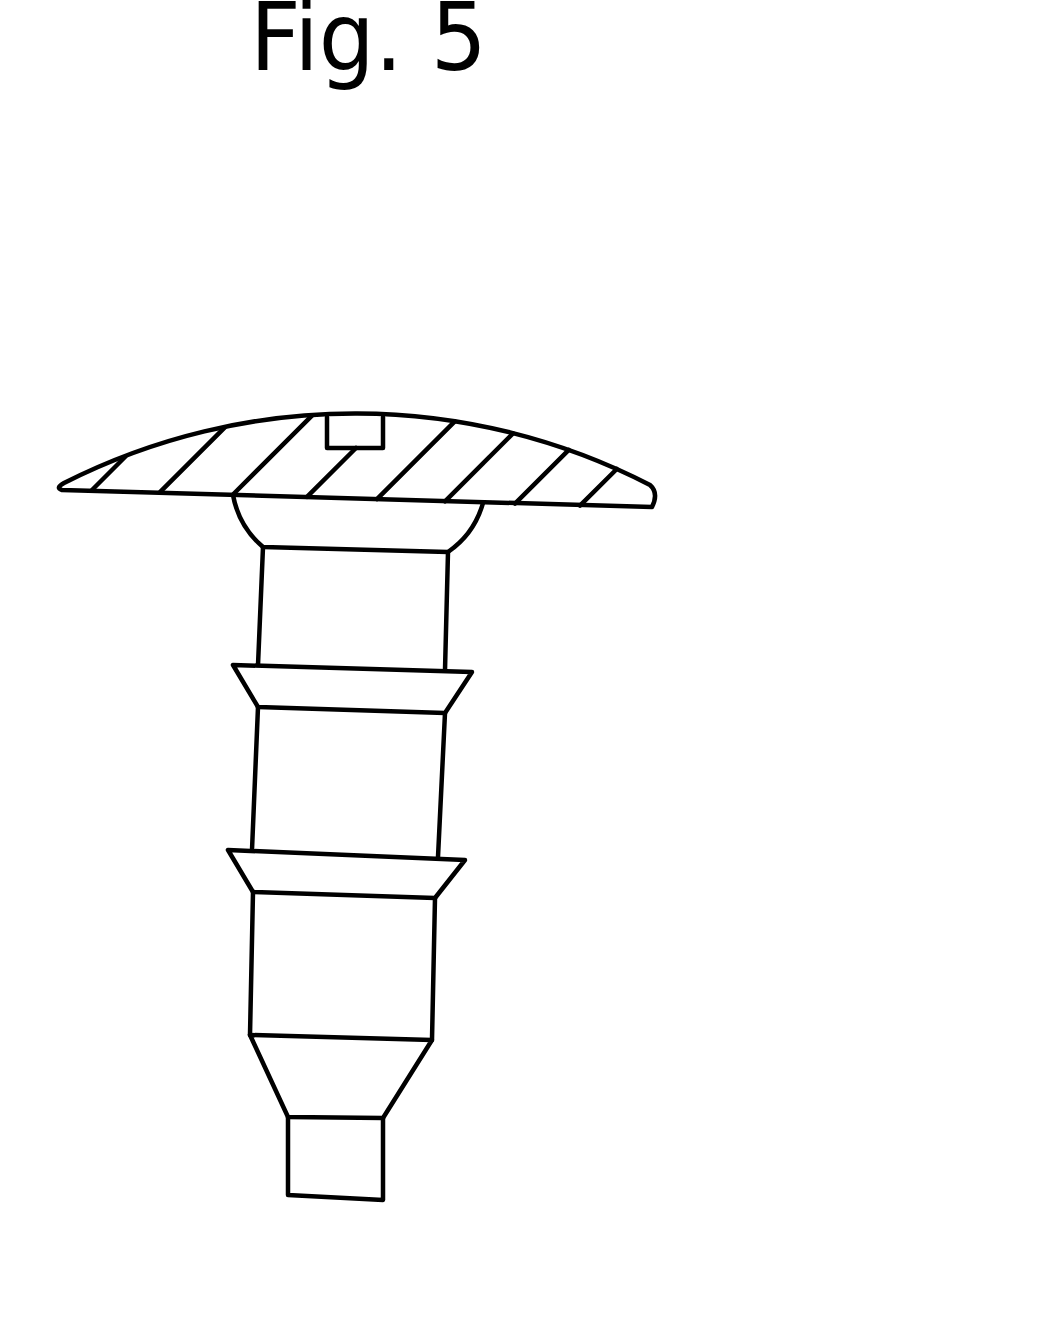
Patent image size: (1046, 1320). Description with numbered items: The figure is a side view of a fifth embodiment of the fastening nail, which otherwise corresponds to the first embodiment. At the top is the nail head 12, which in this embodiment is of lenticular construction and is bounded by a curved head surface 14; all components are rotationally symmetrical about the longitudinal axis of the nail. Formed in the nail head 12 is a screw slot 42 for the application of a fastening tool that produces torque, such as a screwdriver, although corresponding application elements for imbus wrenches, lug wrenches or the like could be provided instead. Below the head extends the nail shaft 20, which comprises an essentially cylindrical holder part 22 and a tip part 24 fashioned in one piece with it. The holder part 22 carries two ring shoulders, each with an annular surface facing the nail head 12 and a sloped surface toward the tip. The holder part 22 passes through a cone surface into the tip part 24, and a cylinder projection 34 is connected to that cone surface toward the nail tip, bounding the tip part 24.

The nail head 12 is at (489, 730).
The head surface 14 is at (357, 363).
The screw slot 42 is at (348, 430).
The nail shaft 20 is at (517, 793).
The holder part 22 is at (393, 792).
The tip part 24 is at (482, 1137).
The cylinder projection 34 is at (355, 1167).